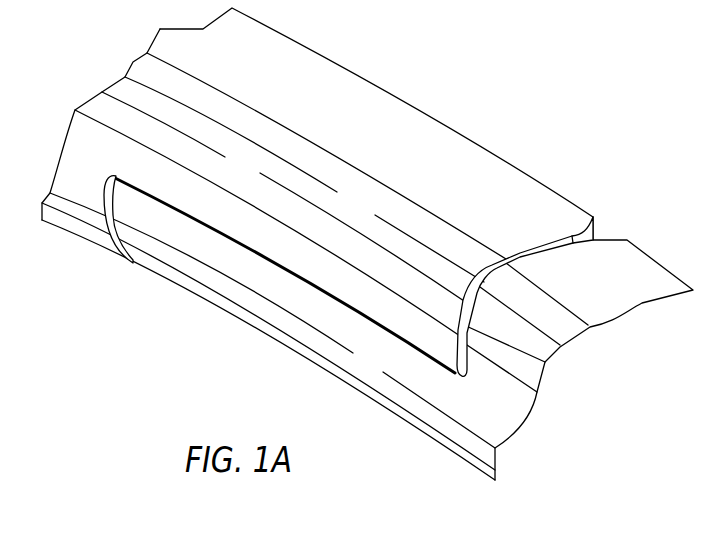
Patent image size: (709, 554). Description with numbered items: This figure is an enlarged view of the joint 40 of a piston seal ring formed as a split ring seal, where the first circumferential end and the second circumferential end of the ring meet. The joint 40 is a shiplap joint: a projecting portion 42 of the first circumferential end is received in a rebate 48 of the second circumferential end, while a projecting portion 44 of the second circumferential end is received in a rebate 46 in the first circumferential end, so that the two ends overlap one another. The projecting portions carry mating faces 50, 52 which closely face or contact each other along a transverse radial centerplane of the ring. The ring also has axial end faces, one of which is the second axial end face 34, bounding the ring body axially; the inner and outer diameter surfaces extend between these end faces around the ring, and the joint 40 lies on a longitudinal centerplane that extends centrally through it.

The second axial end face 34 is at (400, 132).
The joint 40 is at (553, 178).
The projecting portion 42 is at (221, 252).
The projecting portion 44 is at (385, 294).
The rebate 46 is at (432, 322).
The rebate 48 is at (149, 222).
The mating face 50 is at (302, 300).
The mating face 52 is at (302, 300).